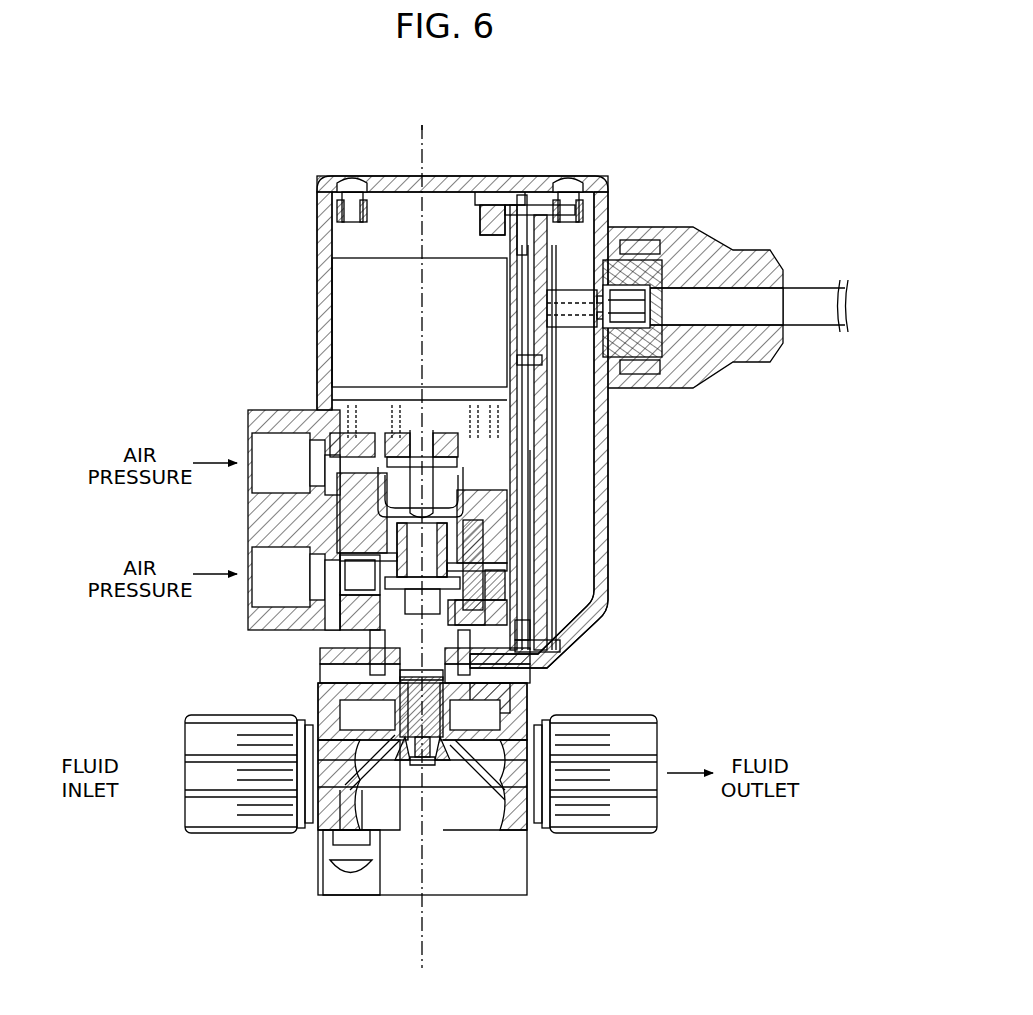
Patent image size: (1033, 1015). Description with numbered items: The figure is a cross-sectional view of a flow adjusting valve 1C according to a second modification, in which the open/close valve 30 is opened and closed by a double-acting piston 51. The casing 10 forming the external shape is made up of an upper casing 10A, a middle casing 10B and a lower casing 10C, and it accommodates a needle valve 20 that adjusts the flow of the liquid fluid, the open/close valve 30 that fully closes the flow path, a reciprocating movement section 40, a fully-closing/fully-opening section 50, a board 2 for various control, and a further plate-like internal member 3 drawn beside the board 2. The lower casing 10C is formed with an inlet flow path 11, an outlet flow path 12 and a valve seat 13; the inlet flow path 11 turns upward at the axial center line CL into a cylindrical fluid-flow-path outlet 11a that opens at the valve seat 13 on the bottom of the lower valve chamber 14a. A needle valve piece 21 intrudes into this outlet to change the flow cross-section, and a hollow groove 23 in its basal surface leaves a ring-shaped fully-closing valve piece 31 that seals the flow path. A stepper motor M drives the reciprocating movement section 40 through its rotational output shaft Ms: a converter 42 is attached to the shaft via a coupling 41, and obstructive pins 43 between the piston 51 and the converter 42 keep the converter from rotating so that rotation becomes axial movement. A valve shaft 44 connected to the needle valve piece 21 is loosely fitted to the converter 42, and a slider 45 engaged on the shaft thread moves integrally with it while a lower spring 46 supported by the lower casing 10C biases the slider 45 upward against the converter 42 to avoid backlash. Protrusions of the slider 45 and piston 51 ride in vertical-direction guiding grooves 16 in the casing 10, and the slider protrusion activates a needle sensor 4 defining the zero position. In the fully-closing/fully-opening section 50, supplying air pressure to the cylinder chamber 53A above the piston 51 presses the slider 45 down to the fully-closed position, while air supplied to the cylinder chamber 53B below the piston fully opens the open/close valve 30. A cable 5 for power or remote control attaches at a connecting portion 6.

The flow adjusting valve 1C is at (630, 90).
The axial center line CL is at (420, 151).
The casing 10 is at (452, 905).
The upper casing 10A is at (317, 256).
The middle casing 10B is at (612, 548).
The lower casing 10C is at (520, 895).
The motor M is at (352, 312).
The rotational output shaft Ms is at (430, 440).
The board 2 is at (540, 420).
The control board 3 is at (524, 405).
The needle sensor 4 is at (515, 630).
The cable 5 is at (800, 288).
The connecting portion 6 is at (713, 230).
The inlet flow path 11 is at (355, 770).
The fluid-flow-path outlet 11a is at (415, 830).
The outlet flow path 12 is at (505, 785).
The valve seat 13 is at (345, 727).
The lower valve chamber 14a is at (522, 742).
The vertical-direction guiding grooves 16 is at (520, 530).
The needle valve 20 is at (410, 745).
The needle valve piece 21 is at (425, 760).
The hollow groove 23 is at (430, 745).
The open/close valve 30 is at (480, 760).
The fully-closing valve piece 31 is at (402, 735).
The reciprocating movement section 40 is at (398, 598).
The coupling 41 is at (500, 520).
The converter 42 is at (492, 583).
The obstructive pins 43 is at (460, 608).
The valve shaft 44 is at (480, 686).
The slider 45 is at (500, 662).
The lower spring 46 is at (380, 664).
The fully-closing/fully-opening section 50 is at (332, 480).
The double-acting piston 51 is at (352, 520).
The cylinder chamber 53A is at (352, 440).
The cylinder chamber 53B is at (350, 576).